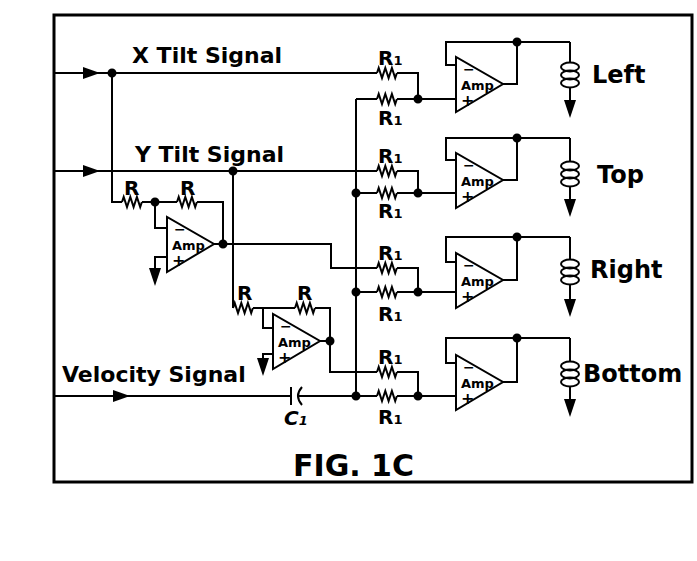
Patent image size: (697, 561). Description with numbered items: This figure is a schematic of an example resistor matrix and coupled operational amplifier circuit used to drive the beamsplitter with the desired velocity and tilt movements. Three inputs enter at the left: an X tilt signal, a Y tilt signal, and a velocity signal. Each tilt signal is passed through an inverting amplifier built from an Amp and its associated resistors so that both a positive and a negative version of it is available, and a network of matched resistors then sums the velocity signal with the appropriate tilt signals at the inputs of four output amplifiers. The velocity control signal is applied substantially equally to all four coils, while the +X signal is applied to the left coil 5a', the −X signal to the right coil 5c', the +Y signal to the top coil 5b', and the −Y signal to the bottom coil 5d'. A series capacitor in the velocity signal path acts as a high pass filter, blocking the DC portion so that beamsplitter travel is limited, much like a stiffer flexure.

The left coil 5a' is at (548, 80).
The top coil 5b' is at (549, 177).
The right coil 5c' is at (549, 277).
The bottom coil 5d' is at (548, 377).